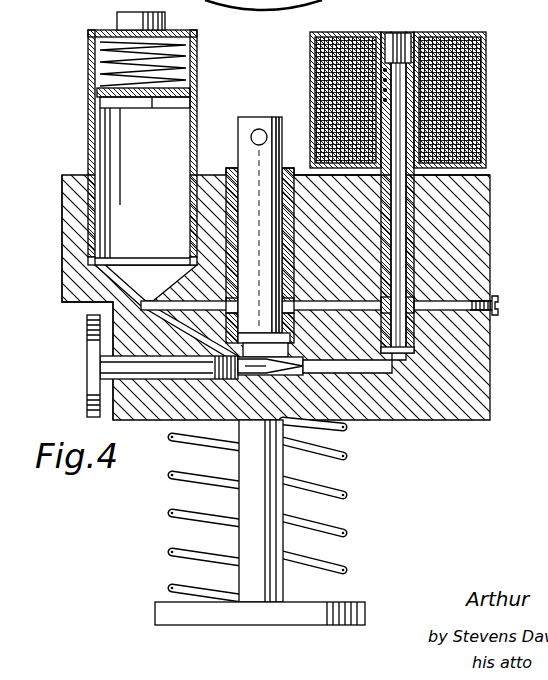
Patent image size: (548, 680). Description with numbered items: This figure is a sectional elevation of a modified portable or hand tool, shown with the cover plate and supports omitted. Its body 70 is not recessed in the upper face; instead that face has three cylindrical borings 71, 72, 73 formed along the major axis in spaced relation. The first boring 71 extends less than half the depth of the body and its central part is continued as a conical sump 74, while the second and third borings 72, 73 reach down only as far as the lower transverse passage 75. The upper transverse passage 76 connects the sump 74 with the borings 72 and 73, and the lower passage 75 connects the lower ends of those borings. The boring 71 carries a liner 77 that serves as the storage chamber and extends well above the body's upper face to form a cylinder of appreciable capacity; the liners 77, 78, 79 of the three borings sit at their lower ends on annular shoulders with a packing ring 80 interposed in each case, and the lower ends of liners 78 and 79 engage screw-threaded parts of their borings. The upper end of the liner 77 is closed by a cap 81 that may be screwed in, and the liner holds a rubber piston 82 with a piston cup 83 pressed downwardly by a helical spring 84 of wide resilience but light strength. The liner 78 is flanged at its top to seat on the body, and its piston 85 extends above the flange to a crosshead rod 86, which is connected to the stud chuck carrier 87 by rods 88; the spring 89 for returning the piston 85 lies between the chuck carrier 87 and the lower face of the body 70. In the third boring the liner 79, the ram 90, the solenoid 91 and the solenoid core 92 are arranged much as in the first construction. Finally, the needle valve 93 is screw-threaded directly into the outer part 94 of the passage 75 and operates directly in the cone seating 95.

The body 70 is at (466, 240).
The cylindrical boring 71 is at (87, 207).
The cylindrical boring 72 is at (228, 188).
The cylindrical boring 73 is at (420, 213).
The sump 74 is at (133, 277).
The lower transverse passage 75 is at (383, 372).
The upper transverse passage 76 is at (458, 307).
The liner 77 is at (88, 66).
The liner 78 is at (306, 178).
The liner 79 is at (404, 145).
The packing ring 80 is at (92, 259).
The cap 81 is at (183, 35).
The piston 82 is at (143, 107).
The piston cup 83 is at (157, 97).
The helical spring 84 is at (185, 70).
The piston 85 is at (274, 118).
The crosshead rod 86 is at (259, 128).
The stud chuck carrier 87 is at (366, 612).
The rods 88 is at (284, 508).
The spring 89 is at (345, 495).
The ram 90 is at (392, 77).
The solenoid 91 is at (461, 90).
The solenoid core 92 is at (397, 33).
The needle valve 93 is at (105, 365).
The outer part of passage 94 is at (125, 382).
The cone seating 95 is at (310, 385).